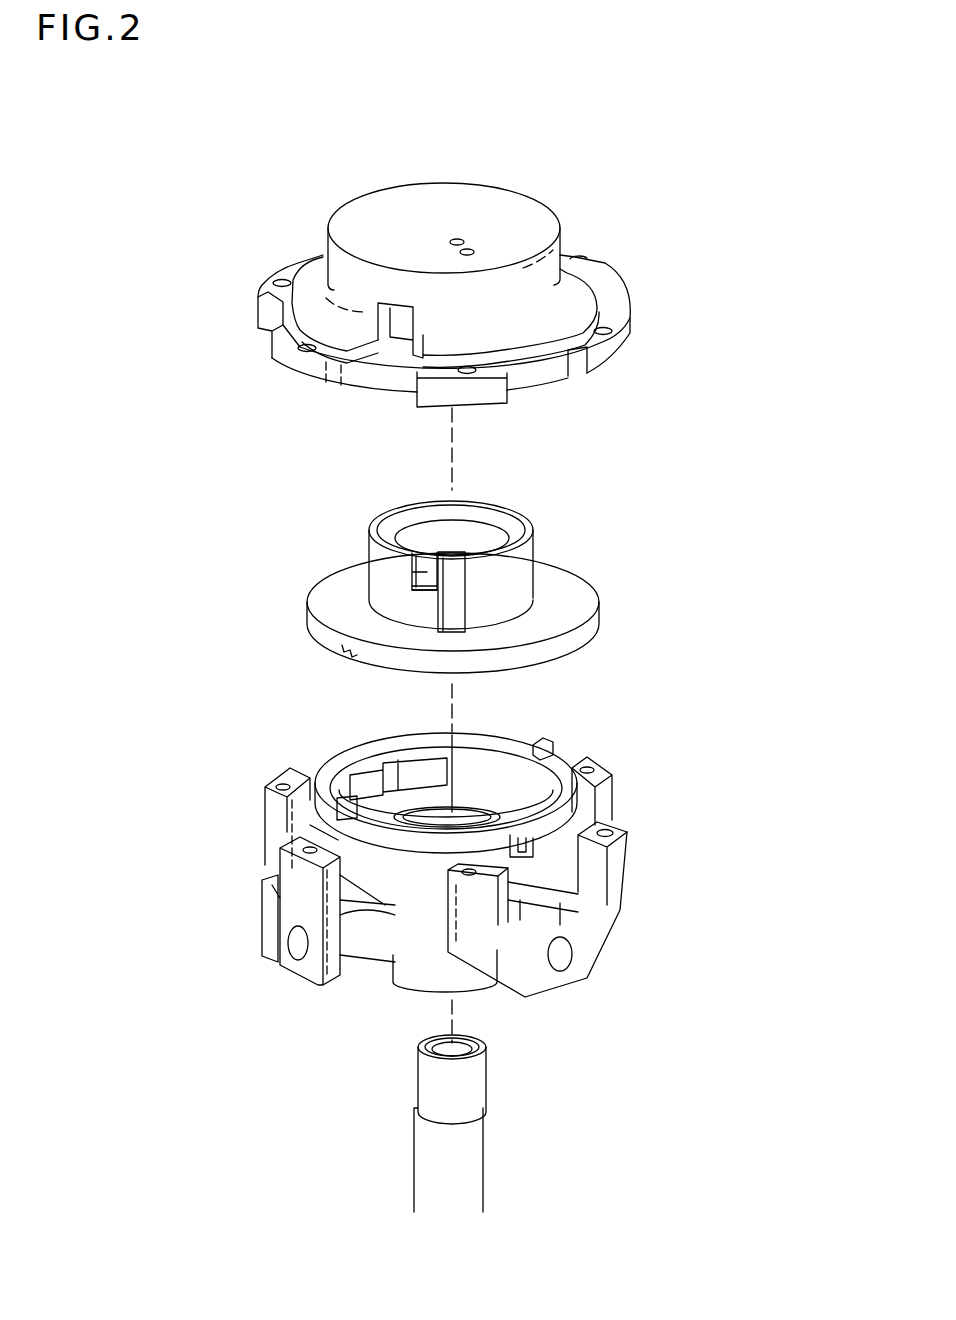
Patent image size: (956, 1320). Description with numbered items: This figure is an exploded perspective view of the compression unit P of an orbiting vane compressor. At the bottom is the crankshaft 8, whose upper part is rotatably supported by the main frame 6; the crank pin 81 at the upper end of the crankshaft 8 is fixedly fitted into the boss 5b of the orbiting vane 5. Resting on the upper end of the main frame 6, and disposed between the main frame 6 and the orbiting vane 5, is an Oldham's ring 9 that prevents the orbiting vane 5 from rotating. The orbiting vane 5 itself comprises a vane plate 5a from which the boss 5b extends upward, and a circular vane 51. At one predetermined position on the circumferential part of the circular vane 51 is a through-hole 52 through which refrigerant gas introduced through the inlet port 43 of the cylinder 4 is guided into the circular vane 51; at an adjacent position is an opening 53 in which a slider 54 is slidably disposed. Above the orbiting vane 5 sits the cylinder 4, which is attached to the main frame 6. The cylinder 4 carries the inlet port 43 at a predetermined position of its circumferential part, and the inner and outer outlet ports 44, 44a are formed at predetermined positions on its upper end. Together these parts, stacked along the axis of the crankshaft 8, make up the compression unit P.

The cylinder 4 is at (442, 298).
The compression unit P is at (212, 320).
The inlet port 43 is at (402, 323).
The inner outlet port 44 is at (457, 239).
The outer outlet port 44a is at (470, 251).
The orbiting vane 5 is at (434, 589).
The vane plate 5a is at (573, 580).
The boss 5b is at (474, 537).
The circular vane 51 is at (517, 562).
The through-hole 52 is at (369, 556).
The opening 53 is at (412, 612).
The slider 54 is at (450, 598).
The main frame 6 is at (615, 877).
The Oldham's ring 9 is at (567, 808).
The crank pin 81 is at (470, 1044).
The crankshaft 8 is at (423, 1143).